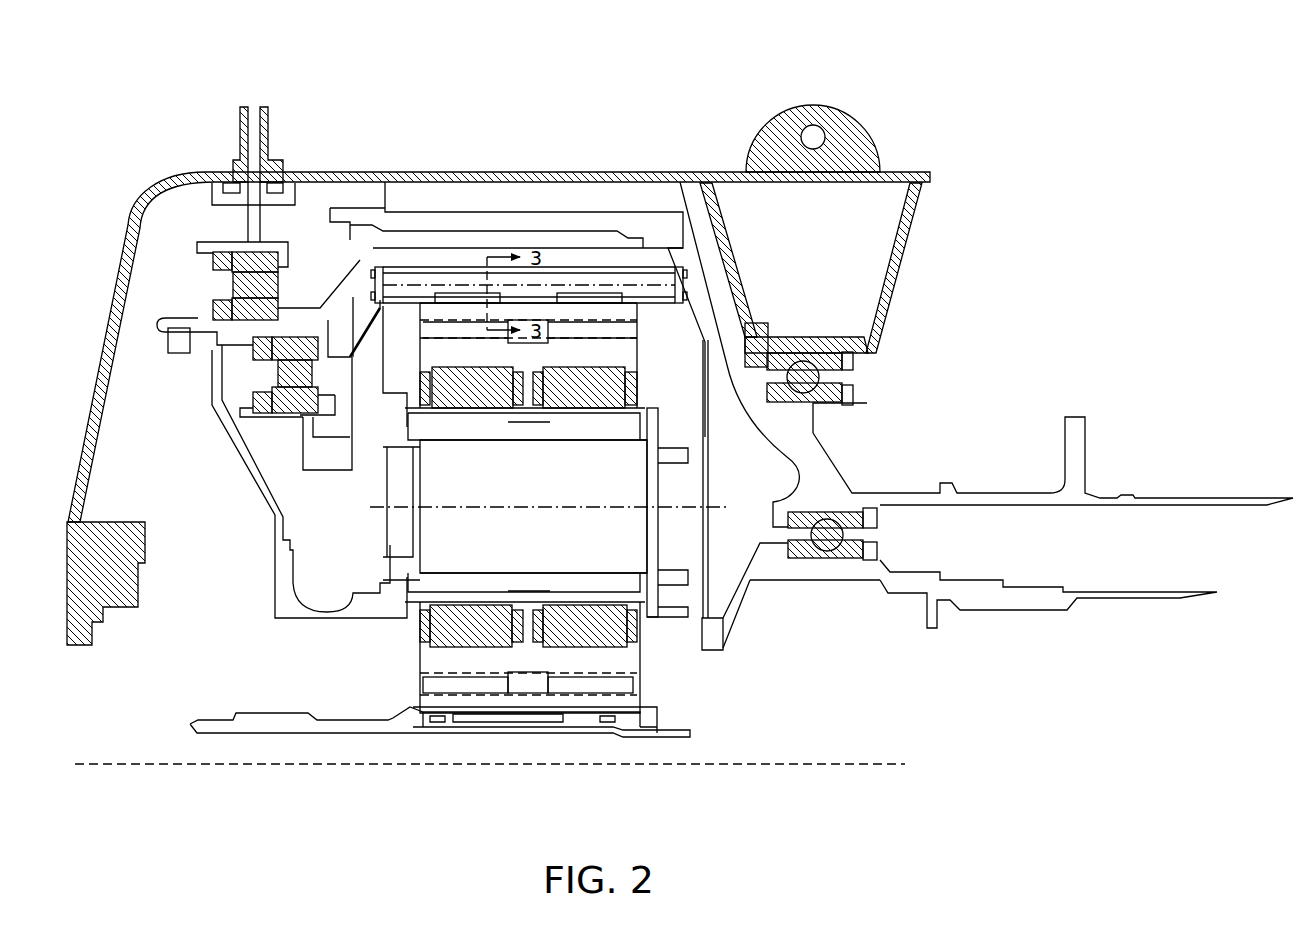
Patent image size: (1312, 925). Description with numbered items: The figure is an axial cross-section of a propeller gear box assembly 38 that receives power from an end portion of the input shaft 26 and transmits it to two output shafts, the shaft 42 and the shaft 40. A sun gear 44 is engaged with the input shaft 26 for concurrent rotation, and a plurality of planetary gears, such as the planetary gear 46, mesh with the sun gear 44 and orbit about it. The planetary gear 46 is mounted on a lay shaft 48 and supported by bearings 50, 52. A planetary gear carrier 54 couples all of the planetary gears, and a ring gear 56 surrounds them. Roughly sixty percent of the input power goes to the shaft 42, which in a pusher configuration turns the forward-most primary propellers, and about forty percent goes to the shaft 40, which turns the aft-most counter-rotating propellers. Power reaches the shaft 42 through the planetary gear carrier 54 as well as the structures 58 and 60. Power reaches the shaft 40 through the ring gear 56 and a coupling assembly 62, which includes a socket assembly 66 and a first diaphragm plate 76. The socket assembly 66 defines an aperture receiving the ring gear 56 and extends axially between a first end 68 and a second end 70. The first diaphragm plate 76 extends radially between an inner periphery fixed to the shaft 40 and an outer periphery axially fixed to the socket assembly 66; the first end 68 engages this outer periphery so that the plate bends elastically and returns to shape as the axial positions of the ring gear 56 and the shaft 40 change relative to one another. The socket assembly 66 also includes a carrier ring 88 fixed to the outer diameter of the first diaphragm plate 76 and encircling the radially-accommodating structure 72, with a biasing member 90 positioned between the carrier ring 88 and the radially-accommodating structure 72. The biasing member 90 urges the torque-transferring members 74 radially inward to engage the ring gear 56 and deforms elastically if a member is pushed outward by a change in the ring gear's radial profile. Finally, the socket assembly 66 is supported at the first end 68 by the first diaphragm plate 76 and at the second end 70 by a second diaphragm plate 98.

The input shaft 26 is at (277, 723).
The propeller gear box assembly 38 is at (680, 92).
The shaft 40 is at (1157, 600).
The shaft 42 is at (1193, 495).
The sun gear 44 is at (563, 703).
The planetary gear 46 is at (623, 352).
The lay shaft 48 is at (580, 600).
The bearing 50 is at (437, 627).
The bearing 52 is at (632, 378).
The planetary gear carrier 54 is at (470, 432).
The ring gear 56 is at (648, 316).
The structure 58 is at (262, 483).
The structure 60 is at (198, 323).
The coupling assembly 62 is at (400, 152).
The socket assembly 66 is at (652, 262).
The first end 68 is at (700, 303).
The second end 70 is at (345, 295).
The radially-accommodating structure 72 is at (400, 330).
The torque-transferring member 74 is at (407, 293).
The first diaphragm plate 76 is at (707, 472).
The carrier ring 88 is at (507, 270).
The biasing member 90 is at (458, 282).
The second diaphragm plate 98 is at (388, 425).